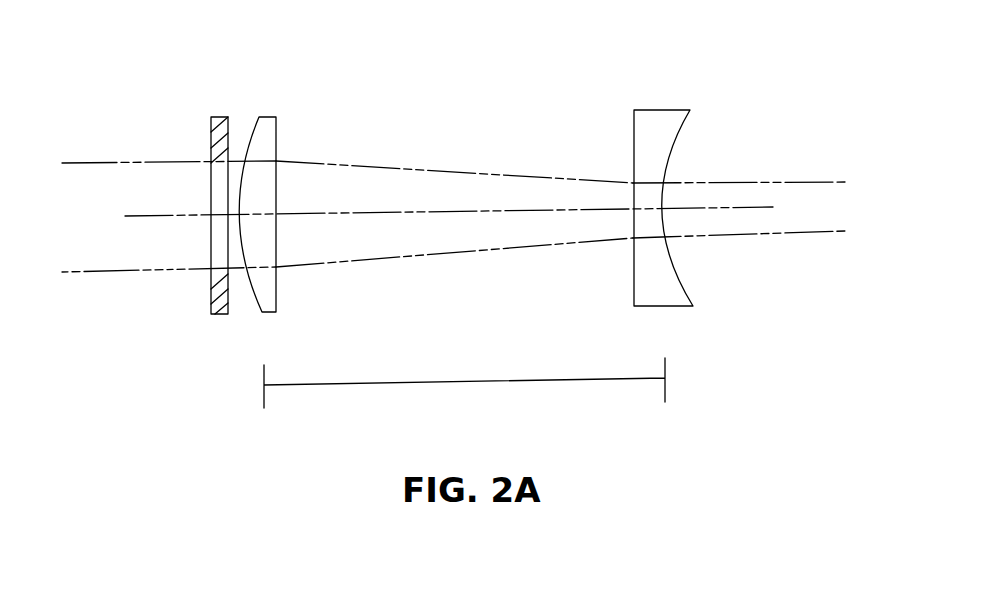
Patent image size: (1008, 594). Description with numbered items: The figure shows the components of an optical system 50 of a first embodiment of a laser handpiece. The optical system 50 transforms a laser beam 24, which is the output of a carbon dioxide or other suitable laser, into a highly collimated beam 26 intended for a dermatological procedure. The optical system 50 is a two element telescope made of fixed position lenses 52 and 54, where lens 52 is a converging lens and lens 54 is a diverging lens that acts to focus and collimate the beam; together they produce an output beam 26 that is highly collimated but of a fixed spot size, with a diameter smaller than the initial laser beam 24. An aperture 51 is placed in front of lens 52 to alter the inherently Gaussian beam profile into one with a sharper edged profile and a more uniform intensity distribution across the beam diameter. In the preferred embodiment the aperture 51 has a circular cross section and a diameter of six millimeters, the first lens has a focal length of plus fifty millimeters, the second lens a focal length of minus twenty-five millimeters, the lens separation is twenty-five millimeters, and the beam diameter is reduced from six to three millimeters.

The optical system 50 is at (428, 76).
The aperture 51 is at (218, 115).
The converging lens 52 is at (268, 311).
The diverging lens 54 is at (661, 308).
The laser beam 24 is at (130, 275).
The collimated beam 26 is at (777, 178).